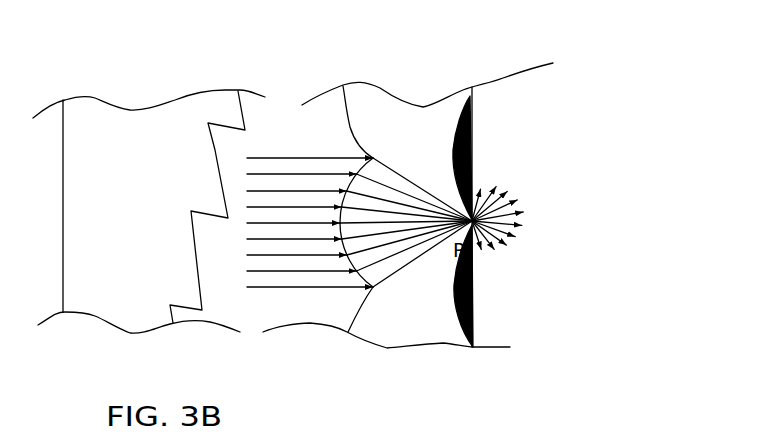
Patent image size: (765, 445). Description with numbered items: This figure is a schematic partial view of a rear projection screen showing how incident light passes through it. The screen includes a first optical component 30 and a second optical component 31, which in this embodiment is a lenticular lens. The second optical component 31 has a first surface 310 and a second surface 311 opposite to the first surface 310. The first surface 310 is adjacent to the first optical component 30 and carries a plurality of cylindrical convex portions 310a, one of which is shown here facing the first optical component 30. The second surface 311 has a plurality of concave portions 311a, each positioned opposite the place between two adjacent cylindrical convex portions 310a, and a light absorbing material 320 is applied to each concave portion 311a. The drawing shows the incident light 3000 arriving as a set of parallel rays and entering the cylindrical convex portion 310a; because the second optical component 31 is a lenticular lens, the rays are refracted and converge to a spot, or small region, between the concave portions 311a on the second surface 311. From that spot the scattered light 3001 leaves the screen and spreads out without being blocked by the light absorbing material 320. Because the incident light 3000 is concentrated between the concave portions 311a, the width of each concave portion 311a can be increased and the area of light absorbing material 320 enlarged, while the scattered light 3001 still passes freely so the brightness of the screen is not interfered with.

The first optical component 30 is at (108, 117).
The second optical component 31 is at (392, 110).
The cylindrical convex portions 310a is at (352, 115).
The first surface 310 is at (358, 324).
The second surface 311 is at (472, 92).
The concave portions 311a is at (457, 127).
The light absorbing material 320 is at (473, 300).
The incident light 3000 is at (292, 292).
The scattered light 3001 is at (513, 220).